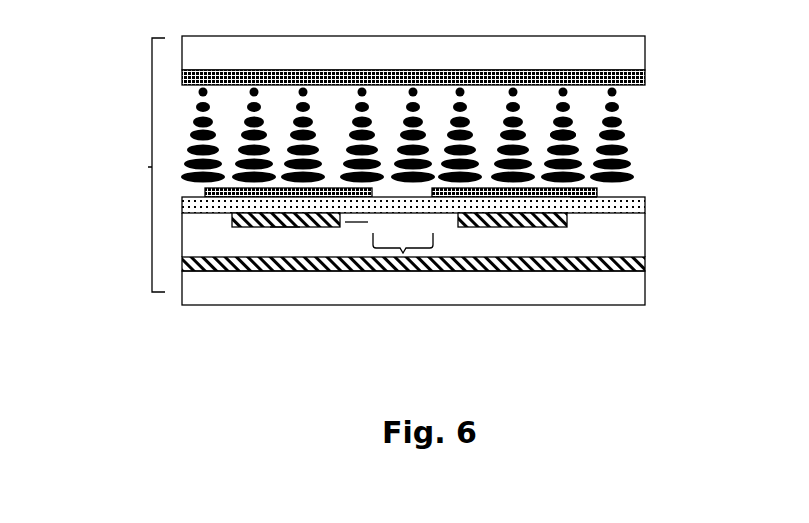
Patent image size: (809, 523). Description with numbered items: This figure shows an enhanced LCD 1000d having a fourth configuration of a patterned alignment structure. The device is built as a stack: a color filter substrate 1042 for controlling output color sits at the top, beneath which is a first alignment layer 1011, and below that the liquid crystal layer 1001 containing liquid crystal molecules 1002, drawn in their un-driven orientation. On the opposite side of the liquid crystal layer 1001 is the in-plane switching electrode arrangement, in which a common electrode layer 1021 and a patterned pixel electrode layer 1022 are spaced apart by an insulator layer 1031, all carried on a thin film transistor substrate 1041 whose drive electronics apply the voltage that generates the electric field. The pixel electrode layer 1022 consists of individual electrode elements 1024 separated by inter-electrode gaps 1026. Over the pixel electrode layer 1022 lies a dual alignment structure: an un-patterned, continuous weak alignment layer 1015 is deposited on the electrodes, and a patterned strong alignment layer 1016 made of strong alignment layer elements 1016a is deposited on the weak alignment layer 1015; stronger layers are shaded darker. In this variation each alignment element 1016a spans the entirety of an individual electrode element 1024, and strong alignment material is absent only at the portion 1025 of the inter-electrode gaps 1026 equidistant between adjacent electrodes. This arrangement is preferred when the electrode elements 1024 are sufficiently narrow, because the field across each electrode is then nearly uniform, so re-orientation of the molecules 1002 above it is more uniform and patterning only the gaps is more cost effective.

The enhanced LCD 1000d is at (148, 167).
The color filter substrate 1042 is at (645, 36).
The first alignment layer 1011 is at (660, 70).
The liquid crystal layer 1001 is at (645, 183).
The liquid crystal molecules 1002 is at (573, 133).
The patterned strong alignment layer 1016 is at (660, 192).
The strong alignment layer element 1016a is at (580, 197).
The weak alignment layer 1015 is at (645, 197).
The pixel electrode layer 1022 is at (660, 219).
The insulator layer 1031 is at (645, 227).
The common electrode layer 1021 is at (660, 257).
The thin film transistor substrate 1041 is at (660, 271).
The individual electrode element 1024 is at (285, 227).
The inter-electrode gap 1026 is at (357, 222).
The portion of the inter-electrode gap 1025 is at (403, 253).